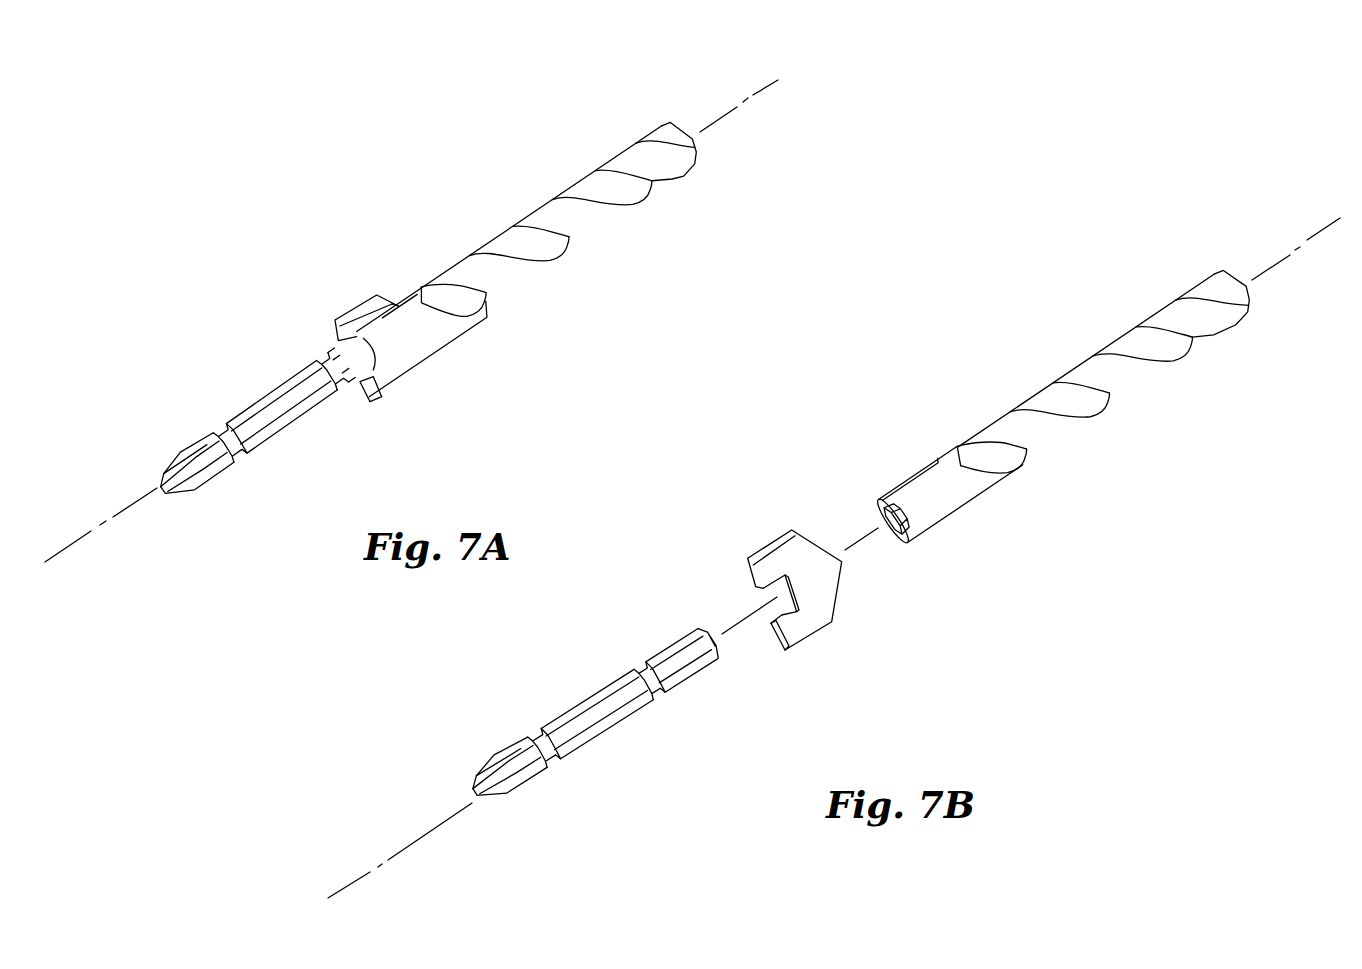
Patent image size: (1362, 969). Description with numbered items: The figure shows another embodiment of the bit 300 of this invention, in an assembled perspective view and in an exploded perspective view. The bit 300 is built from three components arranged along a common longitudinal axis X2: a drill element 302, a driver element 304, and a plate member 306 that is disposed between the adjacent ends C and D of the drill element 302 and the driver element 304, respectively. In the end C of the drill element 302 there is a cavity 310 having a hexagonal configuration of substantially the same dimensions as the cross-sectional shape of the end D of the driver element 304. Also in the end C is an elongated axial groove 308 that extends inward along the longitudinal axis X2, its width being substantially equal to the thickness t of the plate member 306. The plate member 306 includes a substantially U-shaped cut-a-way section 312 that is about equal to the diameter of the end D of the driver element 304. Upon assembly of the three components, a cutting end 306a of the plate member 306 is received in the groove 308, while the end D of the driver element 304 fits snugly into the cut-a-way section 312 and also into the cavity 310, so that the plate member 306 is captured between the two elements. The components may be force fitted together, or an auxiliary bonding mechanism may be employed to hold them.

In FIG. 7A, the bit 300 is at (207, 303).
In FIG. 7B, the bit 300 is at (755, 501).
In FIG. 7A, the drill element 302 is at (539, 263).
In FIG. 7B, the drill element 302 is at (1075, 434).
In FIG. 7A, the driver element 304 is at (275, 432).
In FIG. 7B, the driver element 304 is at (593, 700).
In FIG. 7A, the plate member 306 is at (385, 382).
In FIG. 7B, the plate member 306 is at (795, 610).
In FIG. 7B, the cutting end 306a is at (837, 555).
In FIG. 7A, the elongated axial groove 308 is at (405, 305).
In FIG. 7B, the elongated axial groove 308 is at (904, 478).
In FIG. 7B, the cavity 310 is at (886, 543).
In FIG. 7B, the U-shaped cut-a-way section 312 is at (768, 612).
In FIG. 7A, the end of the drill element C is at (400, 353).
In FIG. 7B, the end of the drill element C is at (942, 507).
In FIG. 7A, the end of the driver element D is at (349, 388).
In FIG. 7B, the end of the driver element D is at (678, 640).
In FIG. 7A, the longitudinal axis X2 is at (728, 112).
In FIG. 7B, the longitudinal axis X2 is at (1283, 258).
In FIG. 7B, the thickness of the plate member t is at (780, 552).